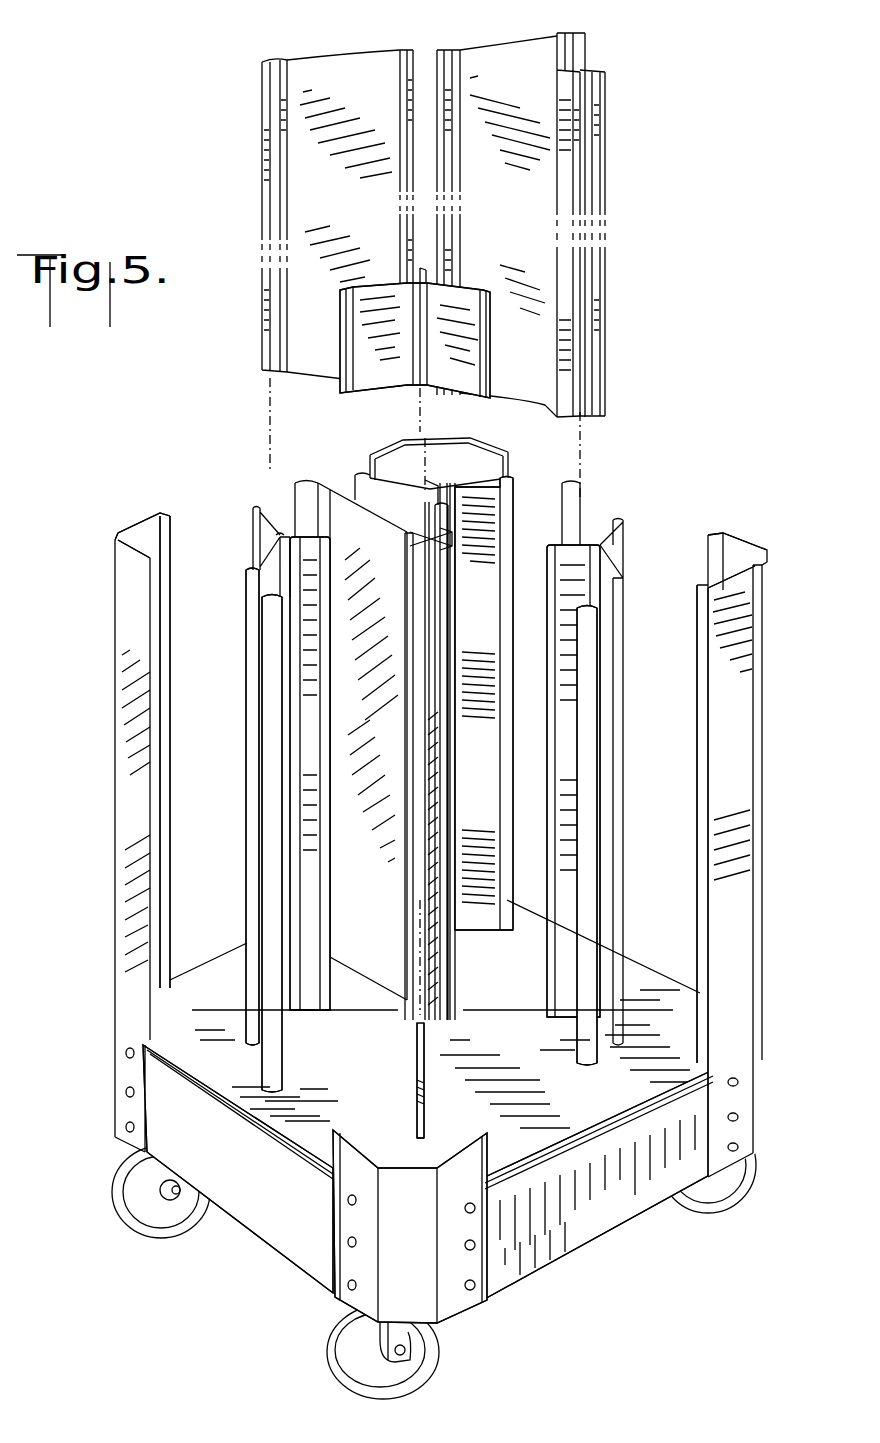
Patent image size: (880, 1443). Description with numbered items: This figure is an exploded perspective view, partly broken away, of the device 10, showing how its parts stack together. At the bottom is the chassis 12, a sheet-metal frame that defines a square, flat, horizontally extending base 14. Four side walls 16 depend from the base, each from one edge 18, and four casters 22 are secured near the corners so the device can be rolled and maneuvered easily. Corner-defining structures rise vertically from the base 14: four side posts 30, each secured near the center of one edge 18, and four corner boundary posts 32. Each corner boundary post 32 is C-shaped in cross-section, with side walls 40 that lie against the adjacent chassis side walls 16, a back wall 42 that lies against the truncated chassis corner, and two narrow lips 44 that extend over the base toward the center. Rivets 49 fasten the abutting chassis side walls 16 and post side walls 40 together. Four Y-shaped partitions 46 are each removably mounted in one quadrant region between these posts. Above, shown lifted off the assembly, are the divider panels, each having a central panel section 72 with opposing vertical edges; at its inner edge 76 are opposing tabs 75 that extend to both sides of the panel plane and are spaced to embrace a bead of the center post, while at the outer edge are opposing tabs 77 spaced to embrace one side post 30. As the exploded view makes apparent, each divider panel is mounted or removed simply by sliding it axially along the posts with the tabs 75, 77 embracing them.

The device 10 is at (80, 803).
The chassis 12 is at (212, 1268).
The base 14 is at (643, 977).
The side walls 16 is at (292, 1248).
The edge 18 is at (257, 1117).
The casters 22 is at (135, 1223).
The side posts 30 is at (270, 660).
The corner boundary posts 32 is at (137, 726).
The side walls 40 is at (387, 380).
The back wall 42 is at (118, 532).
The lips 44 is at (168, 530).
The partitions 46 is at (268, 567).
The rivets 49 is at (126, 1127).
The central panel section 72 is at (439, 220).
The tabs 75 is at (405, 50).
The inner edge 76 is at (572, 54).
The tabs 77 is at (262, 386).